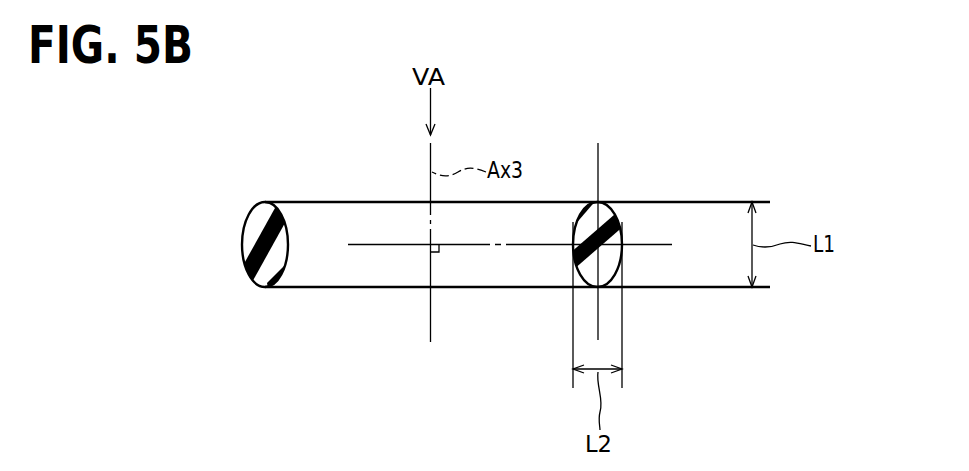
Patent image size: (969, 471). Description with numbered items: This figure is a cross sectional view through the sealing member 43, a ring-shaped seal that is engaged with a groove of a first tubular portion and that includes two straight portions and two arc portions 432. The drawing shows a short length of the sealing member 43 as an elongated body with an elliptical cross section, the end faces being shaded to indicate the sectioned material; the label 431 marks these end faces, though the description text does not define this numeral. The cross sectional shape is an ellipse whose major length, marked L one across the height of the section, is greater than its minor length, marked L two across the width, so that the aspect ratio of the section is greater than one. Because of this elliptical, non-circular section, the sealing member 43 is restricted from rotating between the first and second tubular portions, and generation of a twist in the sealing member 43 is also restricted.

The sealing member 43 is at (456, 221).
The end face of roller 431 is at (675, 224).
The arc portion 432 is at (364, 216).